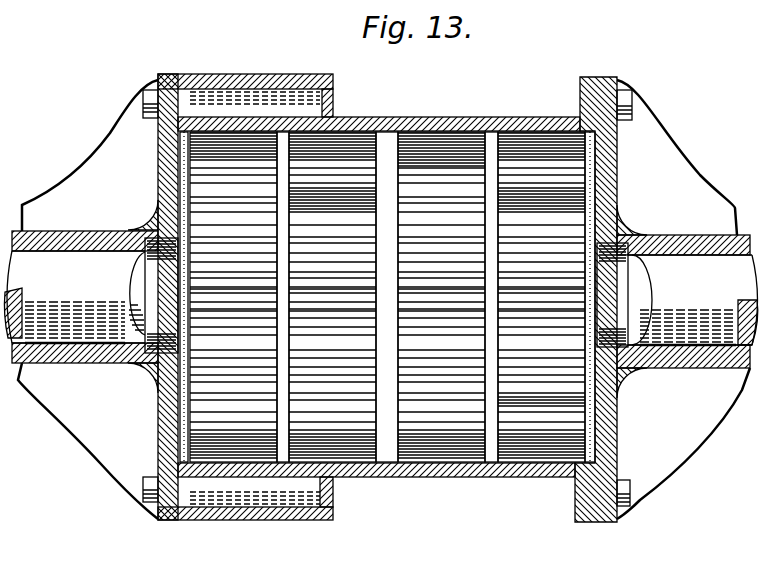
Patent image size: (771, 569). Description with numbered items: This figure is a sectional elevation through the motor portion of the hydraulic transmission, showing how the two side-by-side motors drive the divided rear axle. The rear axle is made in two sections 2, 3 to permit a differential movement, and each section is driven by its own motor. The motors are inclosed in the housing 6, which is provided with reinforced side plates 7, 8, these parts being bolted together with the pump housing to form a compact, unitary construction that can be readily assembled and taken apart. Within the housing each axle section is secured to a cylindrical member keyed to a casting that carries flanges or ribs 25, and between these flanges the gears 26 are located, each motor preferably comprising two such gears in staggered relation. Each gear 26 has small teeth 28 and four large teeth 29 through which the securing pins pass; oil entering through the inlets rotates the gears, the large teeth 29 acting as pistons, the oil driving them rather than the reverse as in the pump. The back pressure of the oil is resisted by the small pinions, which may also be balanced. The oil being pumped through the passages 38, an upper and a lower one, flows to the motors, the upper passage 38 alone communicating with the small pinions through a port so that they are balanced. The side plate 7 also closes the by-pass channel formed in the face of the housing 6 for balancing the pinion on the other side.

The rear axle section 2 is at (74, 297).
The rear axle section 3 is at (693, 300).
The motor housing 6 is at (494, 478).
The side plate 7 is at (157, 457).
The side plate 8 is at (613, 460).
The flanges or ribs 25 is at (380, 183).
The gear 26 is at (447, 200).
The small teeth 28 is at (570, 233).
The large teeth 29 is at (177, 290).
The passage 38 is at (310, 75).